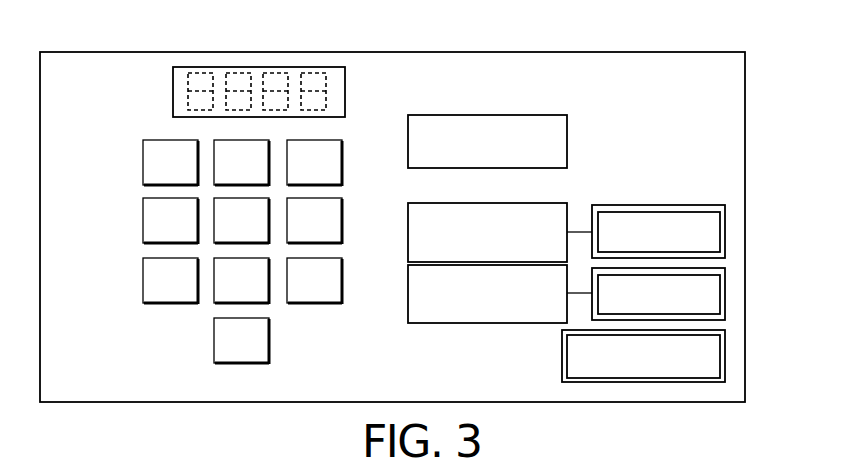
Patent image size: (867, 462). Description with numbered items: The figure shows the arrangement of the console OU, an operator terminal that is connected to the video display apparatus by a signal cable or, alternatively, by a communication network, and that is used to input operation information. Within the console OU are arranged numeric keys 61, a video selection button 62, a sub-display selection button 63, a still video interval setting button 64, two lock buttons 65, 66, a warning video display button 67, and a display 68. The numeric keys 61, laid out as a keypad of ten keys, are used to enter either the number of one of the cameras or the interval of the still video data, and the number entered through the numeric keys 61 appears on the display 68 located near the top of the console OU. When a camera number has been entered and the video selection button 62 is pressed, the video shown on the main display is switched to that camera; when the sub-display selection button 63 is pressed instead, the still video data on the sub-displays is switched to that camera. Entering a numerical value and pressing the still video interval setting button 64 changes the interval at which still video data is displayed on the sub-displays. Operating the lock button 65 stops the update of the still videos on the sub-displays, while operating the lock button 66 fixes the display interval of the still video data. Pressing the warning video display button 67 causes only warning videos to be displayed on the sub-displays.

The console OU is at (90, 52).
The numeric keys 61 is at (118, 140).
The video selection button 62 is at (572, 101).
The sub-display selection button 63 is at (556, 193).
The still video interval setting button 64 is at (454, 323).
The lock button 65 is at (725, 229).
The lock button 66 is at (725, 290).
The warning video display button 67 is at (725, 357).
The display 68 is at (345, 79).